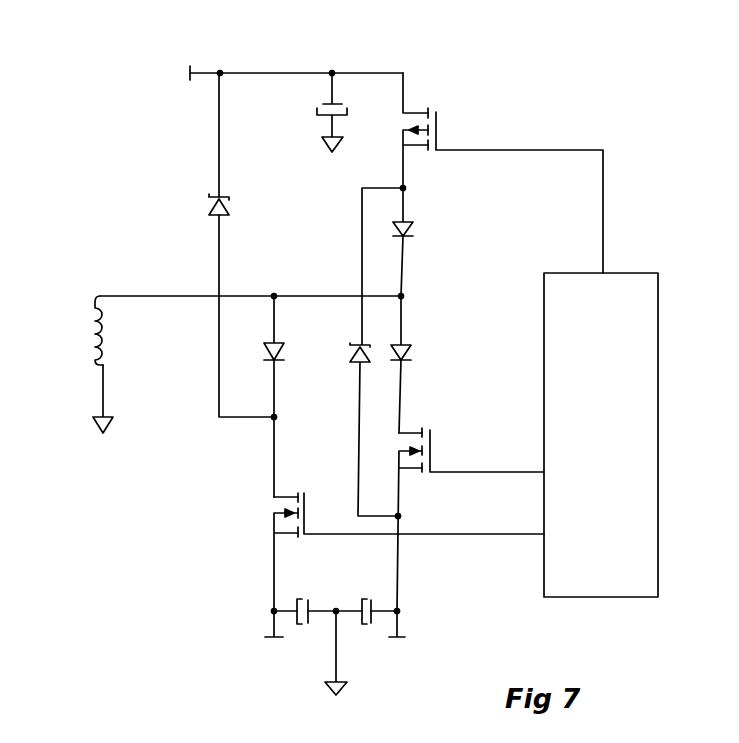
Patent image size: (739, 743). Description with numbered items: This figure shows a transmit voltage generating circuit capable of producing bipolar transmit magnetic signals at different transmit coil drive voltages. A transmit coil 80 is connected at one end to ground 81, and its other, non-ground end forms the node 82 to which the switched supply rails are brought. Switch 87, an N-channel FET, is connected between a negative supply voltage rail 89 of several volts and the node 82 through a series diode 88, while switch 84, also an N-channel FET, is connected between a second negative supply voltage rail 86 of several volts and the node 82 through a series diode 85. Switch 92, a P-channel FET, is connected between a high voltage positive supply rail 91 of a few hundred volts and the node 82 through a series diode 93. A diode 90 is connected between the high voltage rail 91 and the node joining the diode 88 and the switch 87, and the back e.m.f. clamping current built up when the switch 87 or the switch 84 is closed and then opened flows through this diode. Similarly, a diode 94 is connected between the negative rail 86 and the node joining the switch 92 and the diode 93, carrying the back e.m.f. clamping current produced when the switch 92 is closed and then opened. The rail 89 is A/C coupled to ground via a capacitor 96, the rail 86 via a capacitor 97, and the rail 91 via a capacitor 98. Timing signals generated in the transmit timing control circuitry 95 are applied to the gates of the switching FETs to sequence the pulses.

The transmit coil 80 is at (90, 318).
The ground 81 is at (98, 432).
The node 82 is at (158, 295).
The switch 84 is at (418, 435).
The series diode 85 is at (410, 352).
The negative supply voltage rail 86 is at (402, 637).
The switch 87 is at (282, 497).
The series diode 88 is at (283, 350).
The negative supply voltage rail 89 is at (264, 637).
The diode 90 is at (212, 200).
The high voltage positive supply rail 91 is at (188, 71).
The switch 92 is at (420, 110).
The series diode 93 is at (410, 229).
The diode 94 is at (352, 348).
The transmit timing control circuitry 95 is at (612, 483).
The capacitor 96 is at (298, 625).
The capacitor 97 is at (367, 625).
The capacitor 98 is at (347, 110).